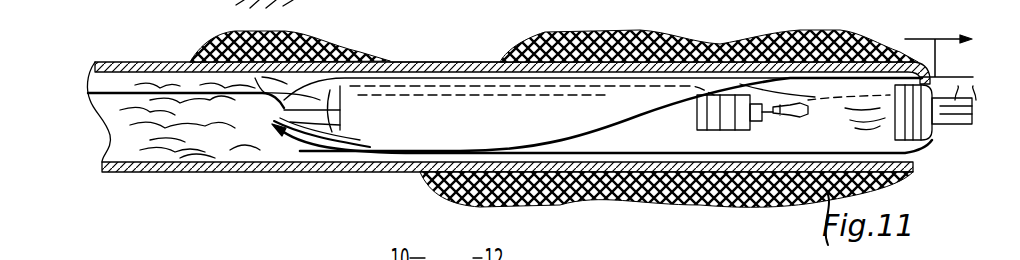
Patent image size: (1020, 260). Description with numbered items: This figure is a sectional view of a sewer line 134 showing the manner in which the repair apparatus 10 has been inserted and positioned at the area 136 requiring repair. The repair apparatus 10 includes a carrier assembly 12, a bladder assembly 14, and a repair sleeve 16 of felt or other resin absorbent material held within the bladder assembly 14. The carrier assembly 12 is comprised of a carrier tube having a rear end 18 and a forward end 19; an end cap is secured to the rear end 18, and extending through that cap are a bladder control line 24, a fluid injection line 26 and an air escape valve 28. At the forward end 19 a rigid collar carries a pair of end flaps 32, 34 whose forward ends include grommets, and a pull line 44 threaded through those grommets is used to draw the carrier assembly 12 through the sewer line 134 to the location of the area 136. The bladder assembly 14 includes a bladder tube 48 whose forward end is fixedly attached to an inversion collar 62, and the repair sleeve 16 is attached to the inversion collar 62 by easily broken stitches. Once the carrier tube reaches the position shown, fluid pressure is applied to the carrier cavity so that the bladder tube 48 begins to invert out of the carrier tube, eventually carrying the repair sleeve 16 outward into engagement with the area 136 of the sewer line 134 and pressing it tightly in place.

The repair apparatus 10 is at (458, 76).
The carrier assembly 12 is at (500, 75).
The bladder assembly 14 is at (375, 95).
The repair sleeve 16 is at (562, 95).
The rear end 18 is at (850, 95).
The forward end 19 is at (406, 70).
The bladder control line 24 is at (892, 75).
The fluid injection line 26 is at (953, 128).
The air escape valve 28 is at (963, 128).
The end flap 32 is at (312, 96).
The end flap 34 is at (287, 173).
The pull line 44 is at (283, 42).
The bladder tube 48 is at (273, 137).
The inversion collar 62 is at (384, 192).
The sewer line 134 is at (126, 172).
The area requiring repair 136 is at (193, 172).